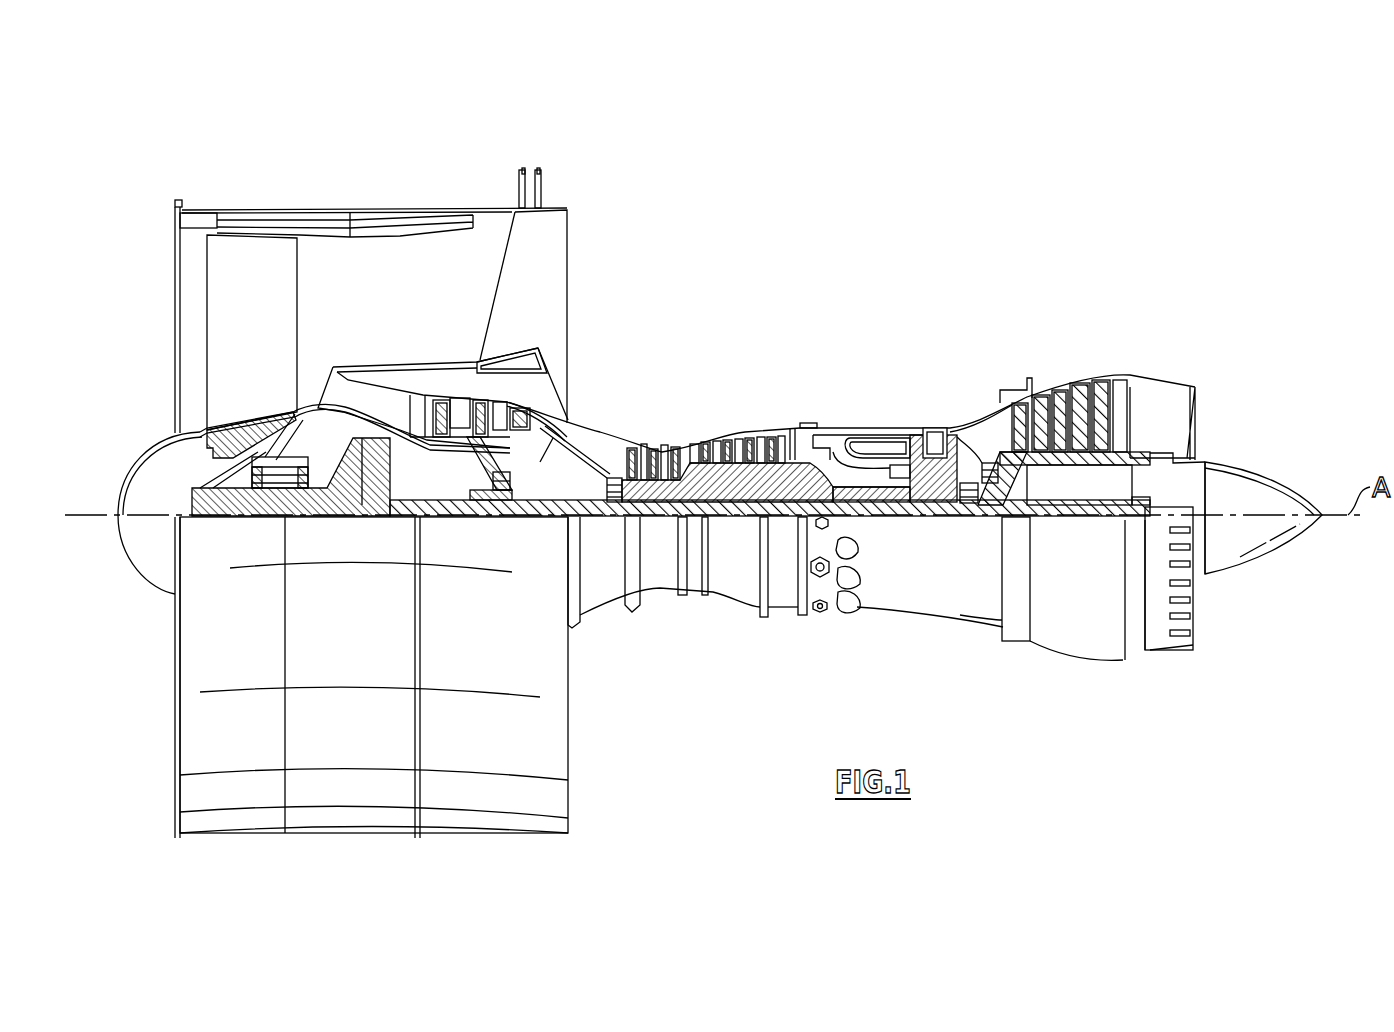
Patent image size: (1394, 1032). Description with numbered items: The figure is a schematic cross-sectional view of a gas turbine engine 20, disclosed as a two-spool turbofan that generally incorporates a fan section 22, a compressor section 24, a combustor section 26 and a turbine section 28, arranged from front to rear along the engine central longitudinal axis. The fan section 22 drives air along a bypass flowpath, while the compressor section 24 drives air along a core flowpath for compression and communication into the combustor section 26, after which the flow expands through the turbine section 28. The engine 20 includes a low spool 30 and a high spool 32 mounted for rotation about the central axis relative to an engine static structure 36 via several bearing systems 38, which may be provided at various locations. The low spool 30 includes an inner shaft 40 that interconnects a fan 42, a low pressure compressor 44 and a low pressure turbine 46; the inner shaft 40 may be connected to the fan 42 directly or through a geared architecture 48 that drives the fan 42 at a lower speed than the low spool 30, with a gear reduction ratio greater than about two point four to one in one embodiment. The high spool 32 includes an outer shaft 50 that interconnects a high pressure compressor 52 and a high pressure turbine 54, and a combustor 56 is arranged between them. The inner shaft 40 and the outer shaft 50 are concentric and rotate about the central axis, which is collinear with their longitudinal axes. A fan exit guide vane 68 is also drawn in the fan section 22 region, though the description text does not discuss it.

The gas turbine engine 20 is at (712, 347).
The fan section 22 is at (282, 193).
The compressor section 24 is at (617, 410).
The combustor section 26 is at (859, 396).
The turbine section 28 is at (1023, 355).
The low spool 30 is at (742, 527).
The high spool 32 is at (792, 445).
The engine static structure 36 is at (784, 616).
The bearing systems 38 is at (523, 500).
The inner shaft 40 is at (586, 520).
The fan 42 is at (263, 349).
The low pressure compressor 44 is at (497, 405).
The low pressure turbine 46 is at (1068, 395).
The geared architecture 48 is at (380, 498).
The outer shaft 50 is at (878, 500).
The high pressure compressor 52 is at (712, 450).
The high pressure turbine 54 is at (940, 428).
The combustor 56 is at (863, 447).
The fan exit guide vane 68 is at (527, 278).